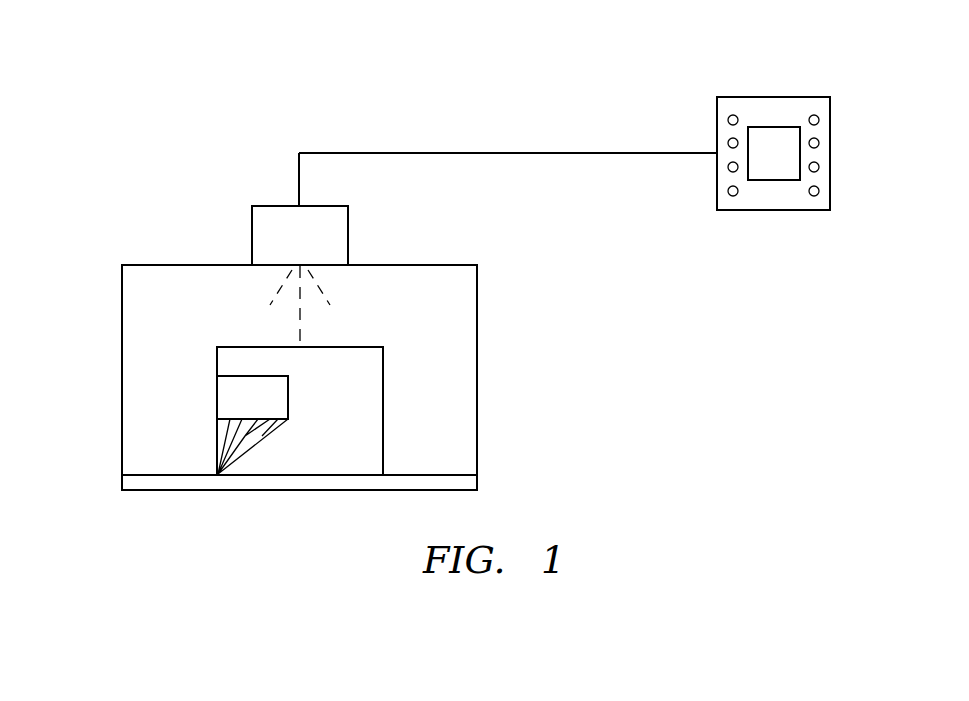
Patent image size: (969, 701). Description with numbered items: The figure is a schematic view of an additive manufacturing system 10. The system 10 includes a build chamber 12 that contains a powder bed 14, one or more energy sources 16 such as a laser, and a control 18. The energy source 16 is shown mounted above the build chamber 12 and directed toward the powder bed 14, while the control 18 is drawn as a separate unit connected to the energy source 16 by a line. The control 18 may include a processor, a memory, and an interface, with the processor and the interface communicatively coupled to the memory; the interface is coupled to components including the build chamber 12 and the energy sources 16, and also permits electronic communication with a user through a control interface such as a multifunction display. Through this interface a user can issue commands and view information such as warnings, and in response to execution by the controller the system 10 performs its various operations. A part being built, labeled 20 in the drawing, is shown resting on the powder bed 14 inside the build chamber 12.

The additive manufacturing system 10 is at (557, 86).
The build chamber 12 is at (96, 359).
The powder bed 14 is at (438, 475).
The energy source 16 is at (272, 217).
The control 18 is at (830, 148).
The printed part with support structure 20 is at (392, 390).